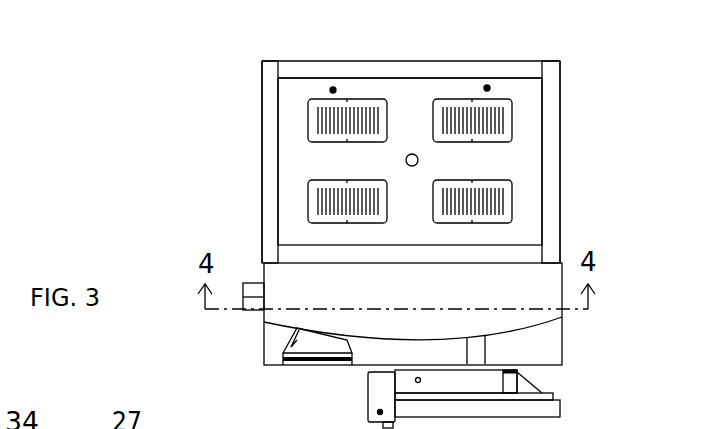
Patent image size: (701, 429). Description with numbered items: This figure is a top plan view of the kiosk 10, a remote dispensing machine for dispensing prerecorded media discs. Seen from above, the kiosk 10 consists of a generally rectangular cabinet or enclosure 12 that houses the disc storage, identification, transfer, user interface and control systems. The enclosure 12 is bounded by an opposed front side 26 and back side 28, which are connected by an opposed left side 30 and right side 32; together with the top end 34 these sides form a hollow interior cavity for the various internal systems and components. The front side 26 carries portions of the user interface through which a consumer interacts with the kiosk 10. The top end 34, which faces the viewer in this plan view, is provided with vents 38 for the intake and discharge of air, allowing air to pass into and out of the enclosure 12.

The kiosk 10 is at (216, 157).
The enclosure 12 is at (326, 55).
The front side 26 is at (280, 366).
The back side 28 is at (403, 61).
The left side 30 is at (560, 185).
The right side 32 is at (262, 190).
The top end 34 is at (423, 92).
The vents 38 is at (366, 100).